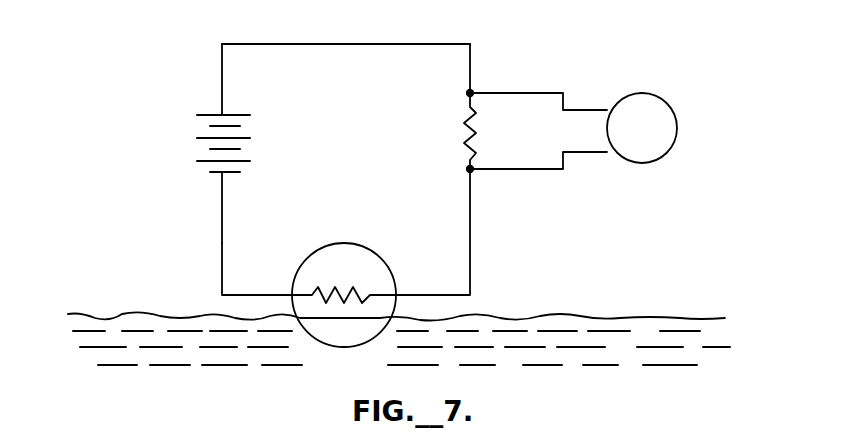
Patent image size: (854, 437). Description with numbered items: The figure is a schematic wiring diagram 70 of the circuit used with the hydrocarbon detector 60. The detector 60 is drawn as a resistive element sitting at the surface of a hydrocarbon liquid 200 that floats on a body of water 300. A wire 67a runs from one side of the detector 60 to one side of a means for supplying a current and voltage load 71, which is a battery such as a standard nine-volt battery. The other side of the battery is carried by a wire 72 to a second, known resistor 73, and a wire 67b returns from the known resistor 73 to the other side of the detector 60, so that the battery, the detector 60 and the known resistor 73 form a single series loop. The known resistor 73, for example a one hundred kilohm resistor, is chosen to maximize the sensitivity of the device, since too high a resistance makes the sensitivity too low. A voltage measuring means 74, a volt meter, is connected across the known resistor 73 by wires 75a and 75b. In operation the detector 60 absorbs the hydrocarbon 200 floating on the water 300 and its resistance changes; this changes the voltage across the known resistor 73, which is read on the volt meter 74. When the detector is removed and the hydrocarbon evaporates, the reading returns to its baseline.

The detector 60 is at (370, 250).
The wire 67a is at (222, 243).
The wire 67b is at (470, 247).
The schematic of the wiring diagram 70 is at (623, 68).
The means for supplying a current and voltage load 71 is at (197, 147).
The wire 72 is at (355, 44).
The known resistor 73 is at (462, 124).
The voltage measuring means 74 is at (677, 119).
The wire 75a is at (513, 93).
The wire 75b is at (528, 171).
The hydrocarbon liquid 200 is at (567, 317).
The water 300 is at (637, 348).